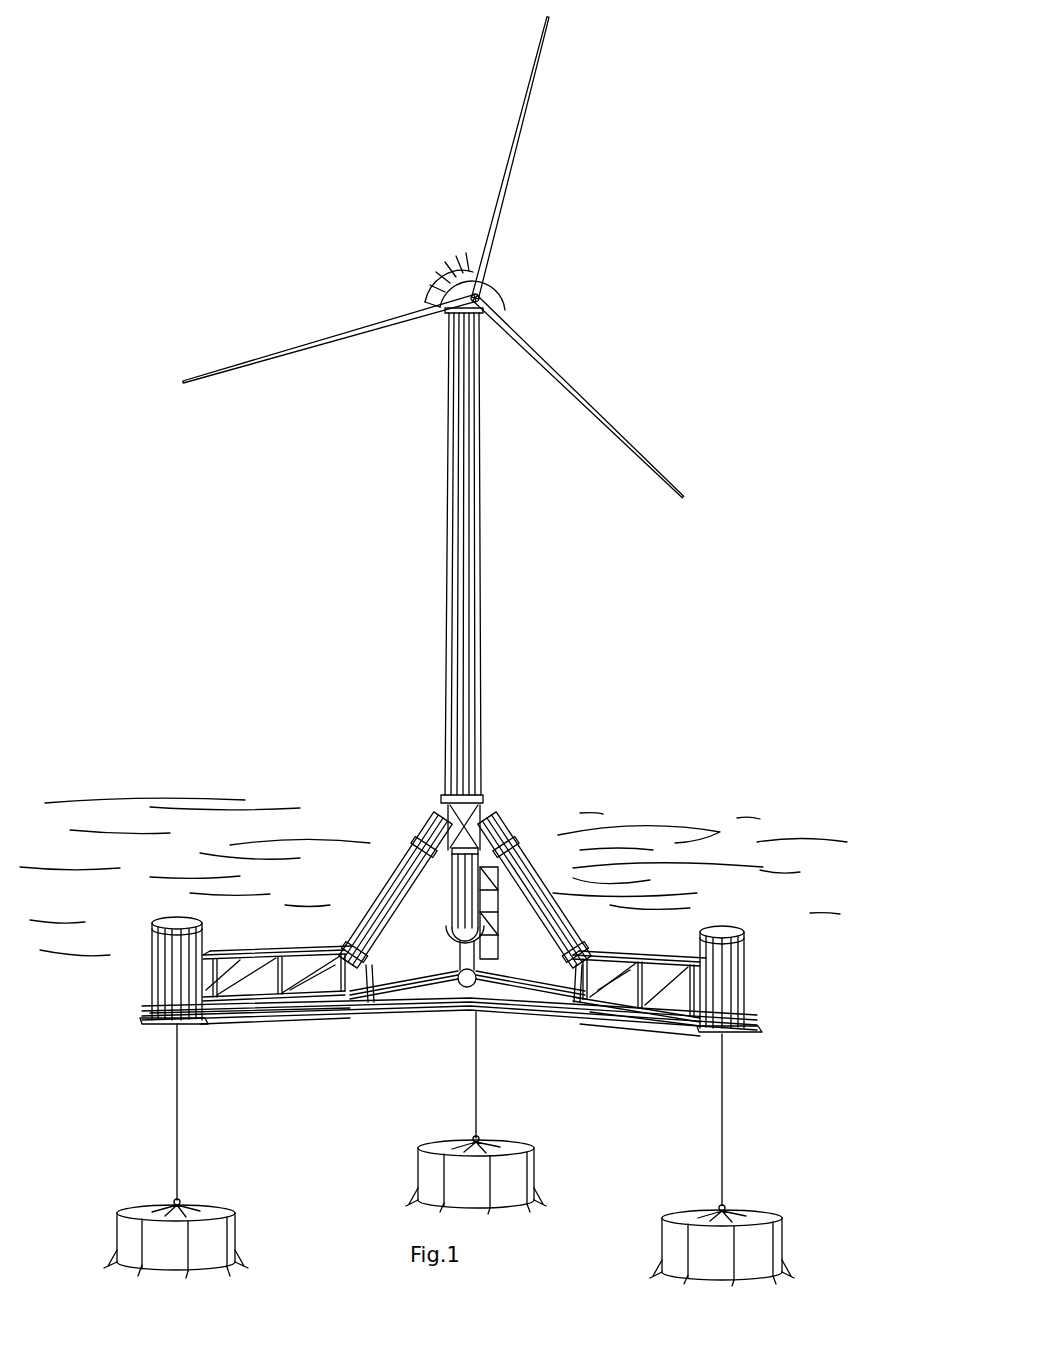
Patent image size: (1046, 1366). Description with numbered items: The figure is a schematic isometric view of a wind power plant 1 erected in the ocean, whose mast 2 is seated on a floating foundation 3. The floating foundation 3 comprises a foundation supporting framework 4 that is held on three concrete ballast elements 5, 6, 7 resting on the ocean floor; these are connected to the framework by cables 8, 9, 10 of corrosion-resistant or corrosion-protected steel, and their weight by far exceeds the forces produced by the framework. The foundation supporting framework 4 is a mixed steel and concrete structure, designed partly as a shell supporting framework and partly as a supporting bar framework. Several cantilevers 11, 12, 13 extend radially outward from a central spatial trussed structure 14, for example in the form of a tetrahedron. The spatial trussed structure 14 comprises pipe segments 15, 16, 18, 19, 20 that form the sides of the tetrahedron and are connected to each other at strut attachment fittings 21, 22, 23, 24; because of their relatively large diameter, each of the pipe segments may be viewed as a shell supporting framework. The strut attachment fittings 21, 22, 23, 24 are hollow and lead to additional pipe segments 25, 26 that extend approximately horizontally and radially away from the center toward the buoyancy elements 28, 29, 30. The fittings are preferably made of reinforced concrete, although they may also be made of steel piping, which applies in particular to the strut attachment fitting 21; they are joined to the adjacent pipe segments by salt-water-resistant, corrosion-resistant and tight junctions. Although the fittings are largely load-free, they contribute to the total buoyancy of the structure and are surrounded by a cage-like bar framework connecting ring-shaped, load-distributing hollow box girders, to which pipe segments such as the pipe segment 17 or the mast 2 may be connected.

The wind power plant 1 is at (648, 260).
The mast 2 is at (468, 583).
The floating foundation 3 is at (630, 766).
The foundation supporting framework 4 is at (648, 918).
The ballast element 5 is at (230, 1180).
The ballast element 6 is at (526, 1142).
The ballast element 7 is at (750, 1185).
The cable 8 is at (177, 1125).
The cable 9 is at (476, 1082).
The cable 10 is at (722, 1100).
The cantilever 11 is at (258, 953).
The cantilever 12 is at (622, 958).
The cantilever 13 is at (545, 903).
The spatial trussed structure 14 is at (400, 835).
The pipe segment 15 is at (365, 905).
The pipe segment 16 is at (452, 893).
The pipe segment 17 is at (498, 880).
The pipe segment 18 is at (402, 986).
The pipe segment 19 is at (400, 1010).
The pipe segment 20 is at (492, 993).
The strut attachment fitting 21 is at (510, 803).
The strut attachment fitting 22 is at (342, 1024).
The strut attachment fitting 23 is at (460, 990).
The strut attachment fitting 24 is at (568, 1026).
The pipe segment 25 is at (258, 1010).
The pipe segment 26 is at (642, 1032).
The buoyancy element 28 is at (154, 912).
The buoyancy element 29 is at (732, 927).
The buoyancy element 30 is at (502, 858).